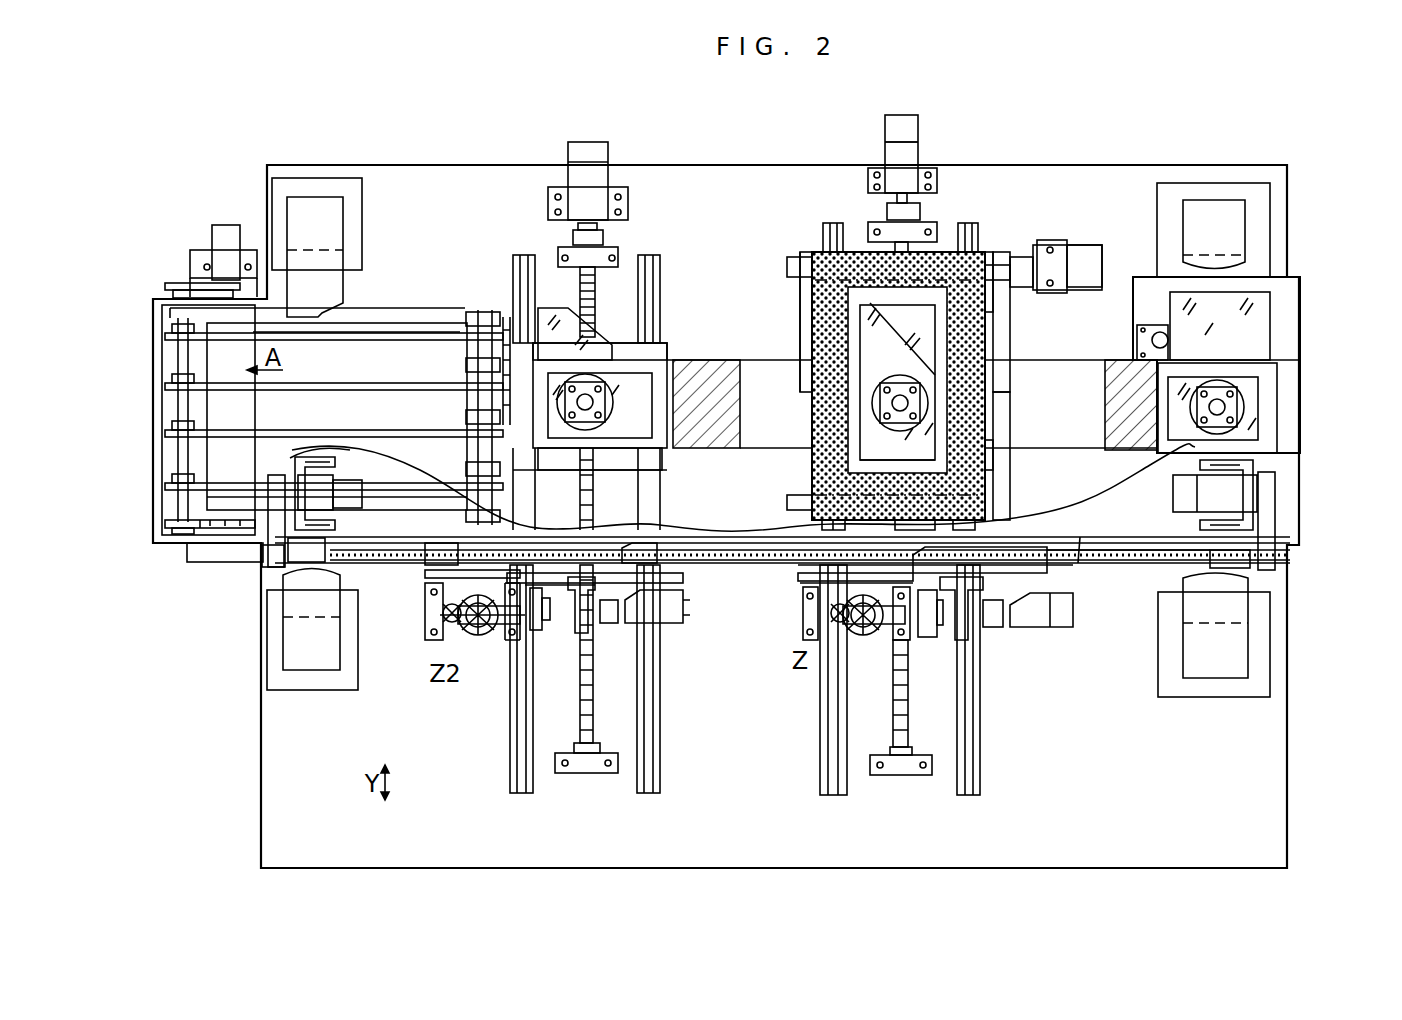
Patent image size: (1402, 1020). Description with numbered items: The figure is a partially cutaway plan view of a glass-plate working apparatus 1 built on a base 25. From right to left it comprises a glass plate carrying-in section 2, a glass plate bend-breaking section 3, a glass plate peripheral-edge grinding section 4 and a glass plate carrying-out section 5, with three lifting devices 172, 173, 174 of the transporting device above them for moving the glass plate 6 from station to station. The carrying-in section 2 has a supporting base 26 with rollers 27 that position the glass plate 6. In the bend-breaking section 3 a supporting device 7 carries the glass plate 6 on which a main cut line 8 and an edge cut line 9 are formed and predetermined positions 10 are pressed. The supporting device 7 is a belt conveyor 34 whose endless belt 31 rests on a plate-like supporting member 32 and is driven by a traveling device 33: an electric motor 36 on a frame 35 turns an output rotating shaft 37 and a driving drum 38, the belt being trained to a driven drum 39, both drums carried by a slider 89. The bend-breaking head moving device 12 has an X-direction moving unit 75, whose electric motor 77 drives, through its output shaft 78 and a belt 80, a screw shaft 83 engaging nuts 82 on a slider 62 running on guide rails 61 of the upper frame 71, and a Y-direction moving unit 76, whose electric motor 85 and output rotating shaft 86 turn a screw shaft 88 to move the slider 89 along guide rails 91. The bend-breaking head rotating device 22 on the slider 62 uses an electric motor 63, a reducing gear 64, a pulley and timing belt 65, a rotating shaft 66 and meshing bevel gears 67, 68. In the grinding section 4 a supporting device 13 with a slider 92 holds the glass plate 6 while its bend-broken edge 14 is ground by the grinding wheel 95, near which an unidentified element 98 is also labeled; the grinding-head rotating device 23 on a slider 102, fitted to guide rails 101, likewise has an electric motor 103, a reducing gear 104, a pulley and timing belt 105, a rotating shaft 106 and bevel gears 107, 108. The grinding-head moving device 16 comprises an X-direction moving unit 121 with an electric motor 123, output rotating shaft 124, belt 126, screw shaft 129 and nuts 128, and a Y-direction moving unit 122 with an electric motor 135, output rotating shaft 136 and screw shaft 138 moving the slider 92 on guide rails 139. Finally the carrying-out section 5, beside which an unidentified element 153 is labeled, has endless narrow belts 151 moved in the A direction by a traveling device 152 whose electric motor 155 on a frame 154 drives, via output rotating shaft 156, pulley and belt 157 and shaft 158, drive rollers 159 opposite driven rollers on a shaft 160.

The glass-plate working apparatus 1 is at (1130, 162).
The glass plate carrying-in section 2 is at (1215, 700).
The glass plate bend-breaking section 3 is at (800, 685).
The glass plate peripheral-edge grinding section 4 is at (498, 728).
The glass plate carrying-out section 5 is at (195, 578).
The glass plate 6 is at (597, 325).
The supporting device 7 is at (802, 250).
The main cut line 8 is at (920, 300).
The edge cut line 9 is at (840, 255).
The predetermined positions 10 is at (962, 258).
The bend-breaking head moving device 12 is at (930, 158).
The supporting device 13 is at (672, 458).
The bend-broken edge 14 is at (560, 300).
The grinding-head moving device 16 is at (375, 502).
The bend-breaking head rotating device 22 is at (1035, 648).
The grinding-head rotating device 23 is at (672, 630).
The base 25 is at (1045, 868).
The supporting base 26 is at (1300, 375).
The rollers 27 is at (1137, 343).
The endless belt 31 is at (1010, 480).
The plate-like supporting member 32 is at (1010, 310).
The traveling device 33 is at (1068, 240).
The belt conveyor 34 is at (798, 300).
The frame 35 is at (1062, 293).
The electric motor 36 is at (1078, 260).
The output rotating shaft 37 is at (1020, 257).
The driving drum 38 is at (810, 250).
The driven drum 39 is at (787, 505).
The guide rails 61 is at (1073, 610).
The slider 62 is at (997, 628).
The electric motor 63 is at (1052, 628).
The reducing gear 64 is at (975, 642).
The pulley and timing belt 65 is at (928, 640).
The rotating shaft 66 is at (870, 636).
The bevel gear 67 is at (803, 612).
The bevel gear 68 is at (850, 635).
The upper frame 71 is at (1085, 555).
The X-direction moving unit 75 is at (1282, 518).
The Y-direction moving unit 76 is at (928, 130).
The electric motor 77 is at (1268, 495).
The output shaft 78 is at (1258, 485).
The belt 80 is at (1258, 558).
The nuts 82 is at (800, 578).
The screw shaft 83 is at (1112, 555).
The electric motor 85 is at (890, 128).
The output rotating shaft 86 is at (888, 195).
The screw shaft 88 is at (908, 700).
The slider 89 is at (1010, 460).
The guide rails 91 is at (980, 712).
The slider 92 is at (668, 352).
The grinding wheel 95 is at (472, 652).
The bevel pinion 98 is at (453, 635).
The guide rails 101 is at (372, 545).
The slider 102 is at (636, 548).
The electric motor 103 is at (685, 608).
The reducing gear 104 is at (590, 636).
The pulley and timing belt 105 is at (540, 633).
The rotating shaft 106 is at (490, 635).
The bevel gear 107 is at (427, 612).
The bevel gear 108 is at (480, 648).
The X-direction moving unit 121 is at (368, 490).
The Y-direction moving unit 122 is at (562, 150).
The electric motor 123 is at (338, 498).
The output rotating shaft 124 is at (280, 483).
The belt 126 is at (272, 550).
The nuts 128 is at (447, 546).
The screw shaft 129 is at (335, 630).
The electric motor 135 is at (555, 205).
The output rotating shaft 136 is at (600, 228).
The screw shaft 138 is at (593, 703).
The guide rails 139 is at (521, 798).
The endless narrow belts 151 is at (385, 383).
The traveling device 152 is at (205, 230).
The conveyor 153 is at (450, 305).
The frame 154 is at (187, 555).
The electric motor 155 is at (228, 242).
The output rotating shaft 156 is at (195, 262).
The pulley and belt 157 is at (165, 286).
The shaft 158 is at (170, 455).
The drive rollers 159 is at (175, 415).
The shaft 160 is at (478, 352).
The lifting device 172 is at (1245, 395).
The lifting device 173 is at (932, 406).
The lifting device 174 is at (615, 410).